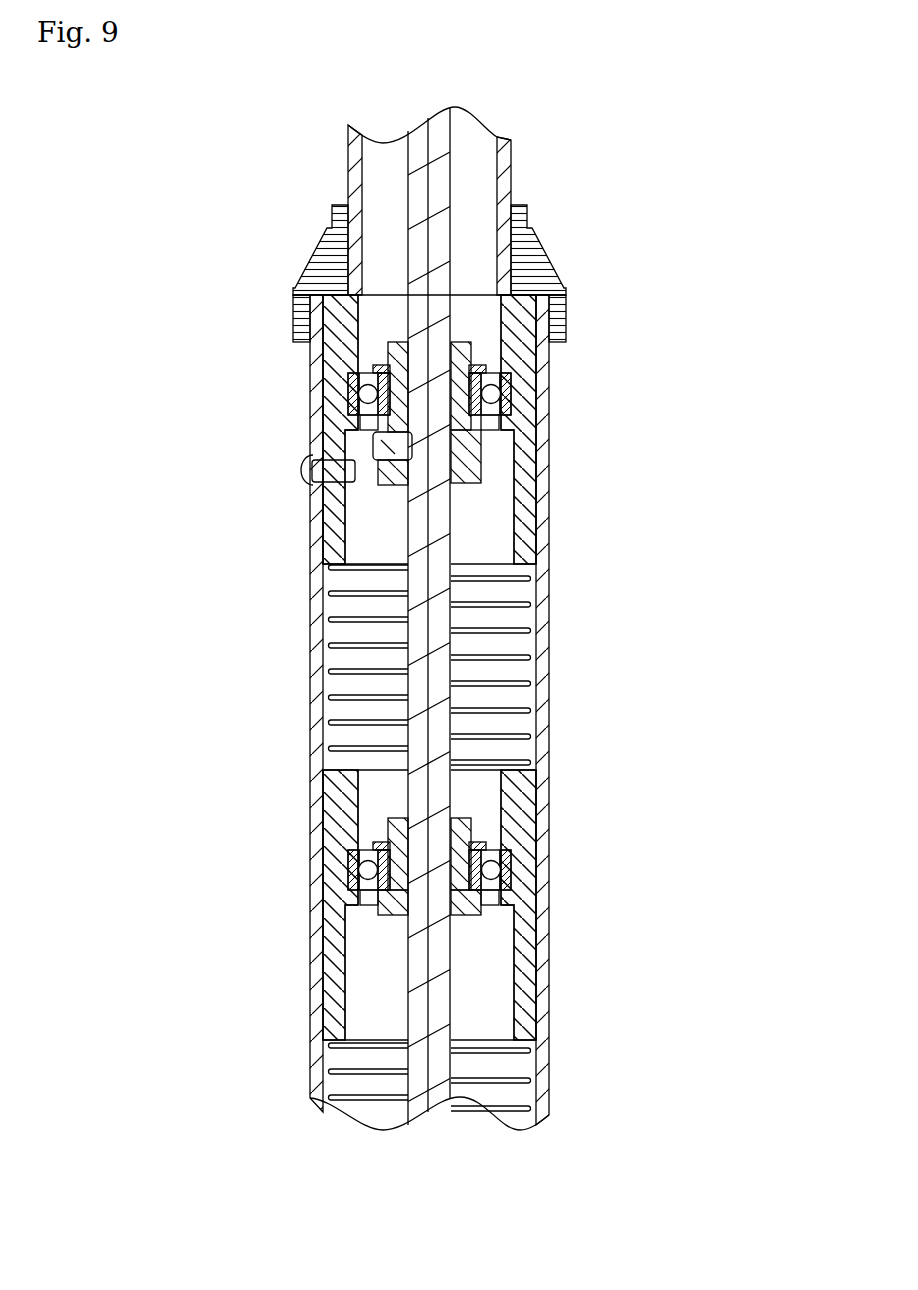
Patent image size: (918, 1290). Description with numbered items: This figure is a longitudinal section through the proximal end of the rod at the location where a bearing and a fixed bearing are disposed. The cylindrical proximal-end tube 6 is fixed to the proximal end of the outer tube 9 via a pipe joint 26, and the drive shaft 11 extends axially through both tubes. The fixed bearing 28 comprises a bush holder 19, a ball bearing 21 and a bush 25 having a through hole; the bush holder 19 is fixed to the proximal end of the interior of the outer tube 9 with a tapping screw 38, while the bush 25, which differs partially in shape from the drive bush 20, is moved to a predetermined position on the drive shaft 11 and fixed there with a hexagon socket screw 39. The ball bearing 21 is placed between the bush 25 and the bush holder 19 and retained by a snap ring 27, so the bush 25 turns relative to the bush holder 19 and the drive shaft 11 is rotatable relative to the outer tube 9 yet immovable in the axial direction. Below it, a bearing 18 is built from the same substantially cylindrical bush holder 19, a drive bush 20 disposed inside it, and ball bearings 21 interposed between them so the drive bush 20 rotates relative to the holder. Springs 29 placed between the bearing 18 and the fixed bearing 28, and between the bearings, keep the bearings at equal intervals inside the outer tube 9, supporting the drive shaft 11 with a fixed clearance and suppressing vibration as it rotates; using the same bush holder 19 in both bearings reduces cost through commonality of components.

The proximal-end tube 6 is at (510, 190).
The outer tube 9 is at (547, 642).
The drive shaft 11 is at (425, 740).
The bearing 18 is at (768, 763).
The bush holder 19 is at (522, 512).
The drive bush 20 is at (460, 827).
The ball bearing 21 is at (493, 393).
The bush 25 is at (470, 447).
The pipe joint 26 is at (322, 266).
The snap ring 27 is at (497, 345).
The fixed bearing 28 is at (733, 322).
The spring 29 is at (343, 643).
The tapping screw 38 is at (317, 472).
The hexagon socket screw 39 is at (387, 445).